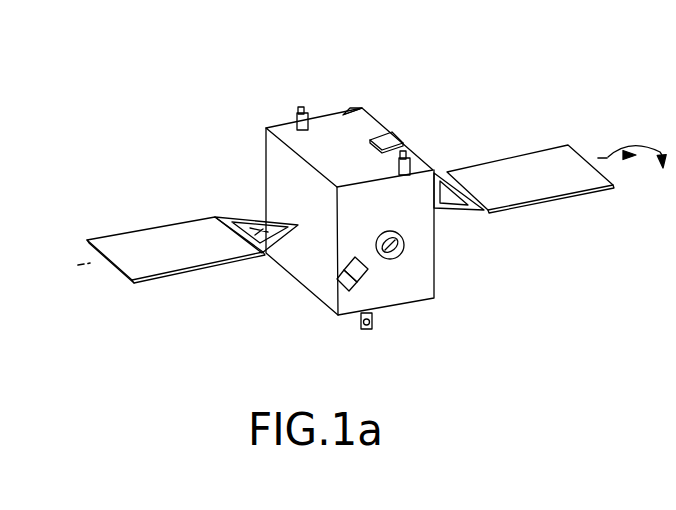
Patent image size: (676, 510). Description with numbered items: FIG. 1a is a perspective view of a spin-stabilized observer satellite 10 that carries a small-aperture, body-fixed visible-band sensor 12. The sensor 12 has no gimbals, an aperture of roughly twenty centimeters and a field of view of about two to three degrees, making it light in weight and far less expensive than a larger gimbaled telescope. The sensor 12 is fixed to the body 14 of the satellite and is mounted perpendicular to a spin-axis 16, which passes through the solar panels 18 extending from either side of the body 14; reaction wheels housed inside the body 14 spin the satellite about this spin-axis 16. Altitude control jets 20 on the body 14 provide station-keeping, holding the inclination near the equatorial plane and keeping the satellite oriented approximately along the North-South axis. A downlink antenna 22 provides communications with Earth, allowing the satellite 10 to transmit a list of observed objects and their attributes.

The spin-stabilized observer satellite 10 is at (169, 105).
The small-aperture body-fixed visible-band sensor 12 is at (414, 257).
The body 14 is at (306, 269).
The spin-axis 16 is at (100, 277).
The solar panels 18 is at (137, 230).
The altitude control jets 20 is at (350, 85).
The downlink antenna 22 is at (398, 128).